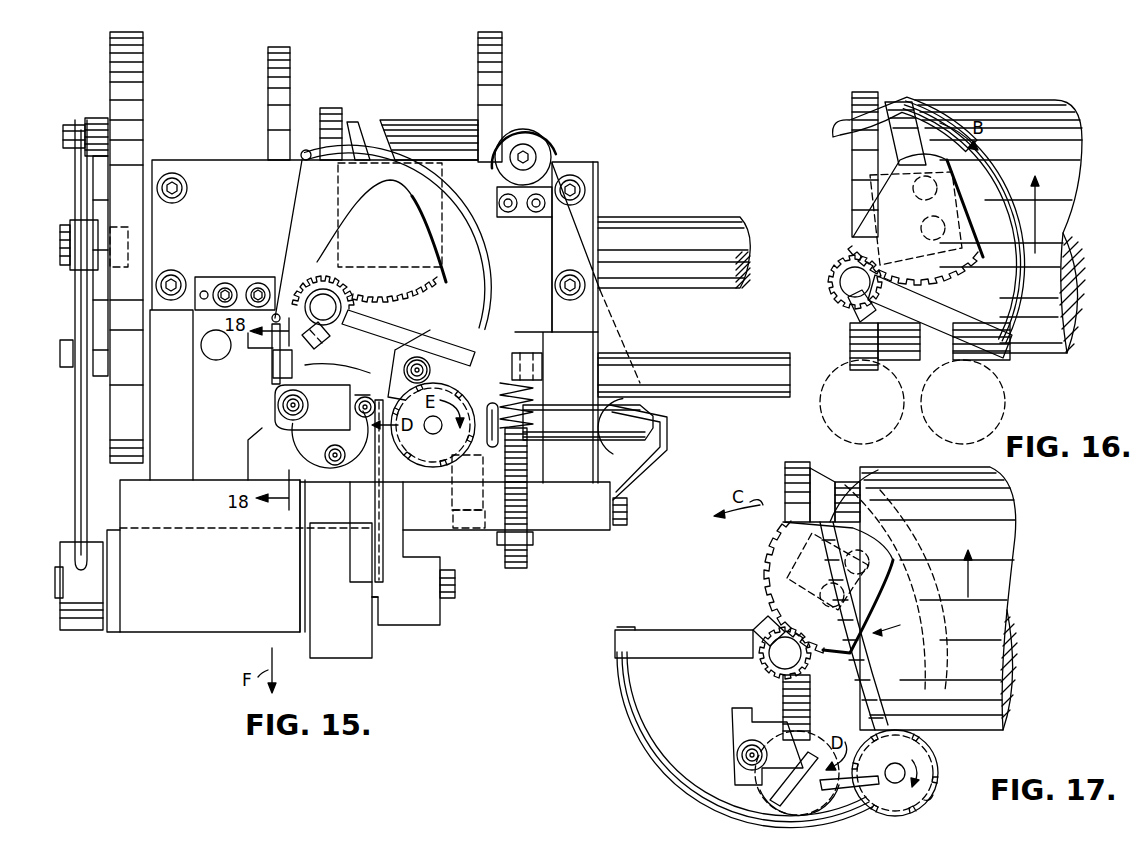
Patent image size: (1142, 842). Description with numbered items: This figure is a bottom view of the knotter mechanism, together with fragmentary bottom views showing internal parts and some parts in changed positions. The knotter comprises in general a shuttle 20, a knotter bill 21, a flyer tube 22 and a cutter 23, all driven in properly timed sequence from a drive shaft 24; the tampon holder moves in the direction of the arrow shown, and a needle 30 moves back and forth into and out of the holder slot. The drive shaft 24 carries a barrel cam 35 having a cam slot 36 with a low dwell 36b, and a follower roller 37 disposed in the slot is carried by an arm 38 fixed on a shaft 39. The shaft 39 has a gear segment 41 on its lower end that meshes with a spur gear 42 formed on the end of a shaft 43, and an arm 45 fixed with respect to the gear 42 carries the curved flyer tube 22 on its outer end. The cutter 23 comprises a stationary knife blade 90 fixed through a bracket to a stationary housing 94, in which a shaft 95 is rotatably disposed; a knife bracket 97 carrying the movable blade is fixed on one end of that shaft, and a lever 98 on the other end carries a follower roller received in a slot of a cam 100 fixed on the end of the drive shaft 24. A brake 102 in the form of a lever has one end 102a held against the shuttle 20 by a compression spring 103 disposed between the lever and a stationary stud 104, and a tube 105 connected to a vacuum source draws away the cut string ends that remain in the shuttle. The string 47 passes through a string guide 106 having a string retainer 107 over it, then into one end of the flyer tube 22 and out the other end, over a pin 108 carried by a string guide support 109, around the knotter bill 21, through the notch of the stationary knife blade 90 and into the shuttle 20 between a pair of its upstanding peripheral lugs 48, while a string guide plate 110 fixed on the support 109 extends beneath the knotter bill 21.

In FIG. 15, the shuttle 20 is at (422, 456).
In FIG. 16, the shuttle 20 is at (1007, 409).
In FIG. 17, the shuttle 20 is at (940, 776).
In FIG. 15, the knotter bill 21 is at (302, 438).
In FIG. 16, the knotter bill 21 is at (820, 410).
In FIG. 17, the knotter bill 21 is at (797, 773).
In FIG. 15, the flyer tube 22 is at (465, 220).
In FIG. 16, the flyer tube 22 is at (990, 188).
In FIG. 17, the flyer tube 22 is at (633, 718).
In FIG. 15, the cutter 23 is at (364, 474).
In FIG. 15, the drive shaft 24 is at (673, 217).
In FIG. 15, the needle 30 is at (273, 372).
In FIG. 15, the barrel cam 35 is at (418, 120).
In FIG. 16, the barrel cam 35 is at (1032, 102).
In FIG. 17, the barrel cam 35 is at (1000, 530).
In FIG. 15, the cam slot 36 is at (358, 133).
In FIG. 16, the cam slot 36 is at (900, 110).
In FIG. 17, the cam slot 36 is at (845, 482).
In FIG. 16, the low dwell 36b is at (944, 311).
In FIG. 17, the low dwell 36b is at (854, 626).
In FIG. 16, the follower roller 37 is at (925, 229).
In FIG. 17, the follower roller 37 is at (850, 596).
In FIG. 16, the arm 38 is at (877, 167).
In FIG. 17, the arm 38 is at (888, 568).
In FIG. 16, the shaft 39 is at (920, 195).
In FIG. 17, the shaft 39 is at (880, 568).
In FIG. 15, the gear segment 41 is at (364, 224).
In FIG. 16, the gear segment 41 is at (897, 175).
In FIG. 17, the gear segment 41 is at (857, 587).
In FIG. 15, the spur gear 42 is at (313, 280).
In FIG. 16, the spur gear 42 is at (843, 263).
In FIG. 17, the spur gear 42 is at (785, 653).
In FIG. 15, the shaft 43 is at (334, 312).
In FIG. 16, the shaft 43 is at (843, 284).
In FIG. 15, the arm 45 is at (446, 346).
In FIG. 16, the arm 45 is at (1003, 350).
In FIG. 17, the arm 45 is at (655, 650).
In FIG. 15, the string 47 is at (292, 188).
In FIG. 17, the string 47 is at (824, 789).
In FIG. 17, the upstanding peripheral lugs 48 is at (927, 798).
In FIG. 15, the stationary knife blade 90 is at (362, 458).
In FIG. 15, the stationary housing 94 is at (395, 504).
In FIG. 15, the shaft 95 is at (237, 623).
In FIG. 15, the knife bracket 97 is at (408, 617).
In FIG. 15, the lever 98 is at (75, 420).
In FIG. 15, the cam 100 is at (110, 62).
In FIG. 15, the brake 102 is at (540, 370).
In FIG. 17, the brake 102 is at (920, 752).
In FIG. 15, the end of the lever 102a is at (395, 374).
In FIG. 15, the compression spring 103 is at (538, 400).
In FIG. 15, the stationary stud 104 is at (527, 463).
In FIG. 15, the tube 105 is at (576, 429).
In FIG. 15, the string guide 106 is at (535, 150).
In FIG. 15, the string retainer 107 is at (553, 154).
In FIG. 15, the pin 108 is at (274, 358).
In FIG. 15, the string guide support 109 is at (243, 277).
In FIG. 15, the string guide plate 110 is at (308, 412).
In FIG. 17, the string guide plate 110 is at (780, 728).